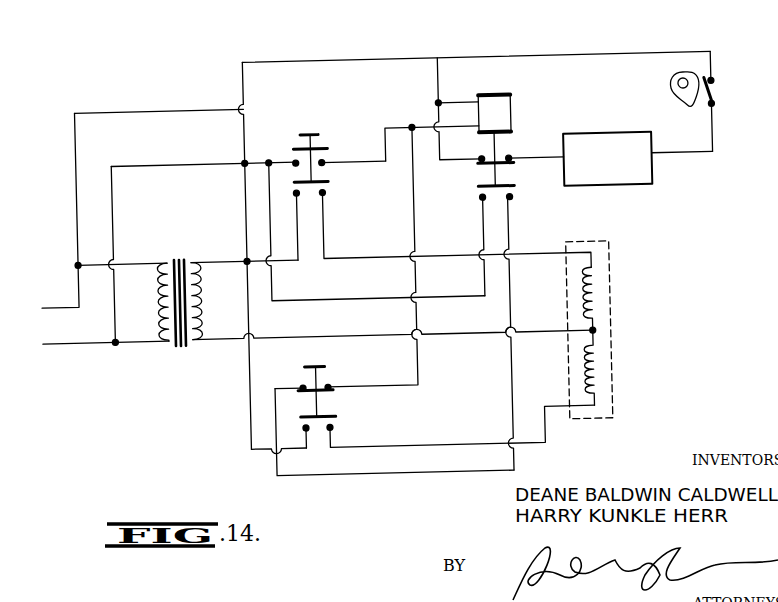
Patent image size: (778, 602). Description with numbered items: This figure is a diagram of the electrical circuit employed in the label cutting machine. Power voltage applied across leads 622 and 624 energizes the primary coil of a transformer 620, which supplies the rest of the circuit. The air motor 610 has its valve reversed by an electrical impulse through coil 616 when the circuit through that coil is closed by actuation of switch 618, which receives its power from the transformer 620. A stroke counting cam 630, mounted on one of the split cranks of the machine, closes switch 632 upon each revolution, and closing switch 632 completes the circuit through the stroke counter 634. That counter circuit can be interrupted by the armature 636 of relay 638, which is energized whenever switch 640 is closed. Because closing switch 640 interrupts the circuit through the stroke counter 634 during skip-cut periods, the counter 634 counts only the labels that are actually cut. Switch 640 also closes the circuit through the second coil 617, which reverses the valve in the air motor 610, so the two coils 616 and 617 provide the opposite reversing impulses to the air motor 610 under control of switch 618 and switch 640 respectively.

The air motor 610 is at (613, 308).
The coil 616 is at (593, 372).
The coil 617 is at (594, 280).
The switch 618 is at (320, 397).
The transformer 620 is at (197, 233).
The lead 622 is at (49, 299).
The lead 624 is at (69, 338).
The stroke counting cam 630 is at (676, 91).
The switch 632 is at (721, 99).
The stroke counter 634 is at (592, 152).
The armature 636 is at (499, 151).
The relay 638 is at (505, 114).
The switch 640 is at (324, 141).